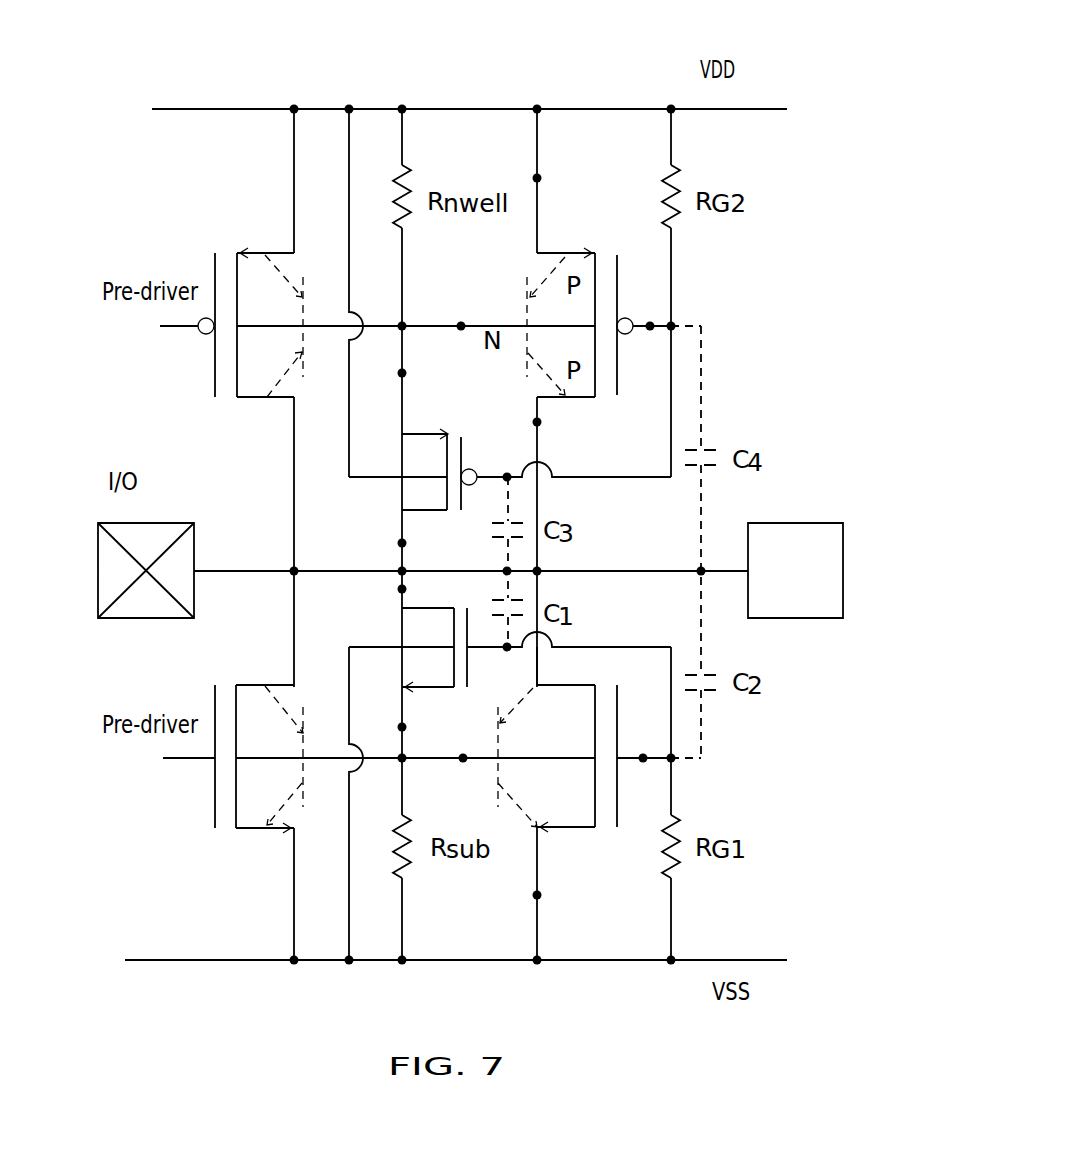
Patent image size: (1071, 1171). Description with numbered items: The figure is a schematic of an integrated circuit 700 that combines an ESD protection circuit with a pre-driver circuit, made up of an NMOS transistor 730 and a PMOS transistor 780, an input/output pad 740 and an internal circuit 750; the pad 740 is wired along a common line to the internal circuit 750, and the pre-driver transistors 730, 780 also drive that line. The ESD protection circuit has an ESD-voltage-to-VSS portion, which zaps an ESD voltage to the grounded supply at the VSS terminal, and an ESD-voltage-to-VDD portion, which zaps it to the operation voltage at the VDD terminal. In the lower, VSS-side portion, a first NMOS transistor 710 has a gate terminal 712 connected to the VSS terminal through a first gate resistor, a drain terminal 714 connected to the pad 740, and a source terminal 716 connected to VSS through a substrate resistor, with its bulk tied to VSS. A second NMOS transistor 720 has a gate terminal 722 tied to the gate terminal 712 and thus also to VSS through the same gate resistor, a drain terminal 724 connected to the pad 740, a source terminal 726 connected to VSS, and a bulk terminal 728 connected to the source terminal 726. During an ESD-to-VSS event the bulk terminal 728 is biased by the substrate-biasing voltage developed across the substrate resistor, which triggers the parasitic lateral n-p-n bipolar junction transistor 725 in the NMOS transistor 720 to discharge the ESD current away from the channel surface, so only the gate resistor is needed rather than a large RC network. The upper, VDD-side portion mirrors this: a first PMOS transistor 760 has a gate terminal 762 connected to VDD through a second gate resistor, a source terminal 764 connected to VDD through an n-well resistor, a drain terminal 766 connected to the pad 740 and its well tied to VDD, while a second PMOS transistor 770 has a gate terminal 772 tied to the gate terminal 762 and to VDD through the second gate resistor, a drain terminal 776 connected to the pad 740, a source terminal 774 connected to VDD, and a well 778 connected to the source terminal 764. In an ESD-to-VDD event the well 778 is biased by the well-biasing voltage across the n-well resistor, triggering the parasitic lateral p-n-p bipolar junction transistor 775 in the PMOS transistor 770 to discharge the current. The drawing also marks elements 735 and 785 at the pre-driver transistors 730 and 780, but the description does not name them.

The integrated circuit 700 is at (785, 85).
The first NMOS transistor 710 is at (464, 704).
The gate terminal of the first NMOS transistor 712 is at (501, 667).
The drain terminal of the first NMOS transistor 714 is at (426, 589).
The source terminal of the first NMOS transistor 716 is at (383, 727).
The second NMOS transistor 720 is at (608, 840).
The gate terminal of the second NMOS transistor 722 is at (649, 778).
The drain terminal of the second NMOS transistor 724 is at (564, 666).
The parasitic lateral n-p-n bipolar junction transistor 725 is at (504, 830).
The source terminal of the second NMOS transistor 726 is at (563, 900).
The bulk terminal of the second NMOS transistor 728 is at (463, 779).
The NMOS transistor of the pre-driver circuit 730 is at (254, 660).
The parasitic bipolar transistor 735 is at (305, 698).
The input/output pad 740 is at (147, 522).
The internal circuit 750 is at (797, 523).
The first PMOS transistor 760 is at (458, 525).
The gate terminal of the first PMOS transistor 762 is at (508, 456).
The source terminal of the first PMOS transistor 764 is at (425, 373).
The drain terminal of the first PMOS transistor 766 is at (380, 543).
The second PMOS transistor 770 is at (607, 225).
The gate terminal of the second PMOS transistor 772 is at (648, 306).
The source terminal of the second PMOS transistor 774 is at (561, 179).
The parasitic lateral p-n-p bipolar junction transistor 775 is at (510, 361).
The drain terminal of the second PMOS transistor 776 is at (560, 434).
The well of the second PMOS transistor 778 is at (461, 306).
The PMOS transistor of the pre-driver circuit 780 is at (249, 223).
The parasitic bipolar transistor 785 is at (290, 393).